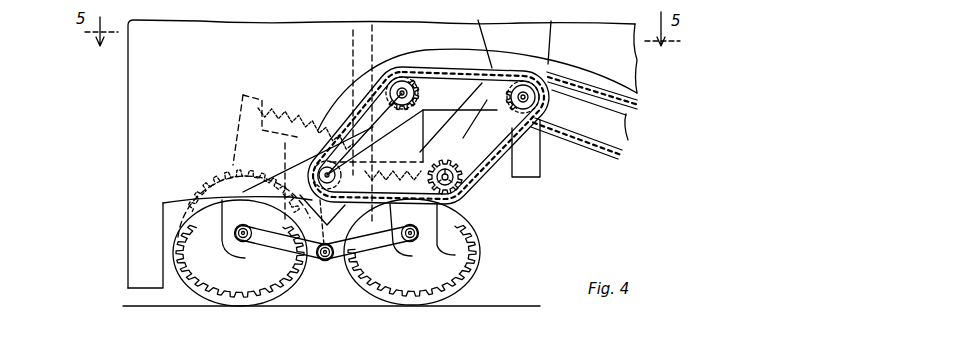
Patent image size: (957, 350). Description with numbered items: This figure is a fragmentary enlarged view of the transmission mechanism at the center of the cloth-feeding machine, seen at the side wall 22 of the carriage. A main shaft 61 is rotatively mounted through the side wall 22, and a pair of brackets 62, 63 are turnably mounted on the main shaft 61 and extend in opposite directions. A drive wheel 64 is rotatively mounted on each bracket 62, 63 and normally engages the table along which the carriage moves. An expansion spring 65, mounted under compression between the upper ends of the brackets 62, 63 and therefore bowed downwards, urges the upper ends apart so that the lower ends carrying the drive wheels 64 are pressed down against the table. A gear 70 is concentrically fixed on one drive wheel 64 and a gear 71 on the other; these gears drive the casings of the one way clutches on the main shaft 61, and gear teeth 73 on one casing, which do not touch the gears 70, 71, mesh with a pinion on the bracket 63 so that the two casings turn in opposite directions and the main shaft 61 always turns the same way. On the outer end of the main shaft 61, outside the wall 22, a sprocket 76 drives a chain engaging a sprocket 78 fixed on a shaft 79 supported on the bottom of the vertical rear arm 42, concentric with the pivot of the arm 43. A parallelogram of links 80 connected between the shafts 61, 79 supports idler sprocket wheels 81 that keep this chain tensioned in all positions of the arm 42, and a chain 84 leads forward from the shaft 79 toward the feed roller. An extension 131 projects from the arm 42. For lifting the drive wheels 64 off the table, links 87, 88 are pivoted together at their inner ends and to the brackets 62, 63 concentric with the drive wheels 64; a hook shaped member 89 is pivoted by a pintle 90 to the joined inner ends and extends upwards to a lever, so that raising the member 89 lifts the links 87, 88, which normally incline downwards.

The side wall 22 is at (140, 162).
The rear arm 42 is at (548, 46).
The arm 43 is at (628, 127).
The main shaft 61 is at (327, 160).
The bracket 62 is at (240, 245).
The bracket 63 is at (434, 250).
The drive wheel 64 is at (213, 292).
The expansion spring 65 is at (265, 162).
The gear 70 is at (190, 263).
The gear 71 is at (474, 228).
The gear teeth 73 is at (365, 162).
The sprocket 76 is at (308, 160).
The sprocket 78 is at (480, 176).
The shaft 79 is at (521, 82).
The parallelogram of links 80 is at (458, 122).
The idler sprocket wheels 81 is at (415, 83).
The chain 84 is at (612, 150).
The link 87 is at (318, 200).
The link 88 is at (368, 240).
The hook shaped member 89 is at (353, 39).
The pintle 90 is at (324, 261).
The extension 131 is at (533, 168).